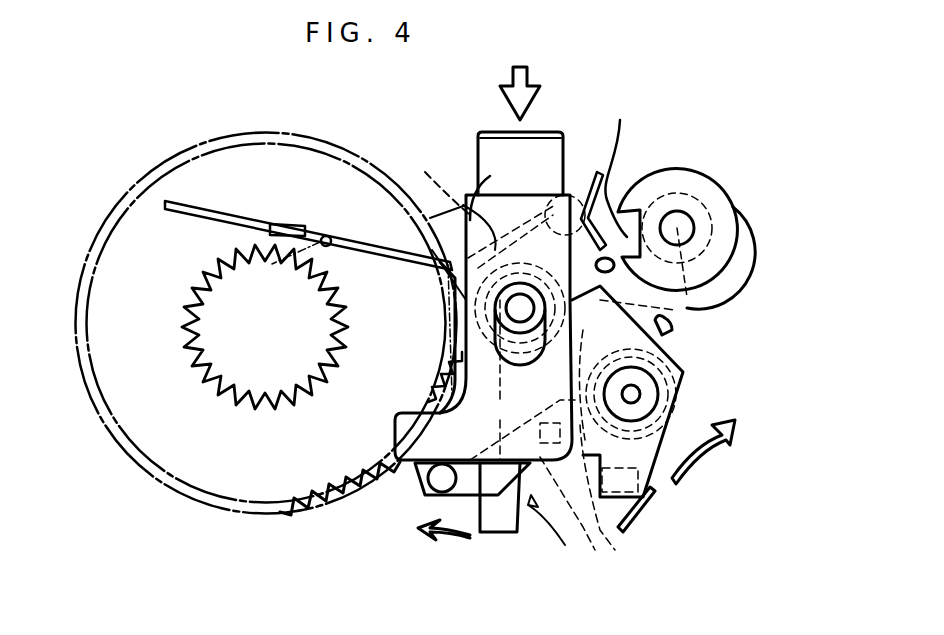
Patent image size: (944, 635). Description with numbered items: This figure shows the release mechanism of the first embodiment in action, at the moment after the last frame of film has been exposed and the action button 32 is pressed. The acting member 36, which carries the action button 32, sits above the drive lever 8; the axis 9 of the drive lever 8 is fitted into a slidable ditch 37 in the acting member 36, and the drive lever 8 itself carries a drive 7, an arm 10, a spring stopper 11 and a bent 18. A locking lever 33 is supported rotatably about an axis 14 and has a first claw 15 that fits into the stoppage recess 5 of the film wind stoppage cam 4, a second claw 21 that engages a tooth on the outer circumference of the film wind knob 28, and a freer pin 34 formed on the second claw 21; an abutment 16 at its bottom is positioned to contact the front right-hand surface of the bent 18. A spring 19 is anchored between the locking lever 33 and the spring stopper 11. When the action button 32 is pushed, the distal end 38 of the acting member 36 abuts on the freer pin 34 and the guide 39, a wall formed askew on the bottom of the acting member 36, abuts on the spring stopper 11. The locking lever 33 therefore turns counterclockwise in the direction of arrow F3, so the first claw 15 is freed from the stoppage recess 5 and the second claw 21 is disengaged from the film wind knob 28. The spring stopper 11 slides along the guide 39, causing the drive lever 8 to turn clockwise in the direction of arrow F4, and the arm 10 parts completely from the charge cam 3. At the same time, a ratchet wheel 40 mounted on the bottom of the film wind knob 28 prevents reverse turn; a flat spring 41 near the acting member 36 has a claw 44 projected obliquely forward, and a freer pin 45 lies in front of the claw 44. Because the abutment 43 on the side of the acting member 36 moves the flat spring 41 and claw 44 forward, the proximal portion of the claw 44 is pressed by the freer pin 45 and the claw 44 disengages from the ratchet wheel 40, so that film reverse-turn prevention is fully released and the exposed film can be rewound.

The charge cam 3 is at (743, 283).
The film wind stoppage cam 4 is at (708, 175).
The stoppage recess 5 is at (622, 233).
The drive 7 is at (503, 532).
The drive lever 8 is at (547, 530).
The axis 9 is at (510, 310).
The arm 10 is at (672, 328).
The spring stopper 11 is at (580, 195).
The axis 14 is at (640, 400).
The first claw 15 is at (621, 164).
The abutment 16 is at (616, 498).
The bent 18 is at (576, 521).
The spring 19 is at (635, 518).
The second claw 21 is at (432, 488).
The film wind knob 28 is at (135, 222).
The action button 32 is at (488, 135).
The locking lever 33 is at (700, 380).
The freer pin 34 is at (420, 495).
The acting member 36 is at (497, 205).
The slidable ditch 37 is at (505, 366).
The distal end 38 is at (395, 435).
The guide 39 is at (425, 180).
The ratchet wheel 40 is at (192, 305).
The flat spring 41 is at (222, 210).
The abutment 43 is at (440, 225).
The claw 44 is at (285, 222).
The freer pin 45 is at (328, 250).
The arrow F3 is at (714, 457).
The arrow F4 is at (444, 552).